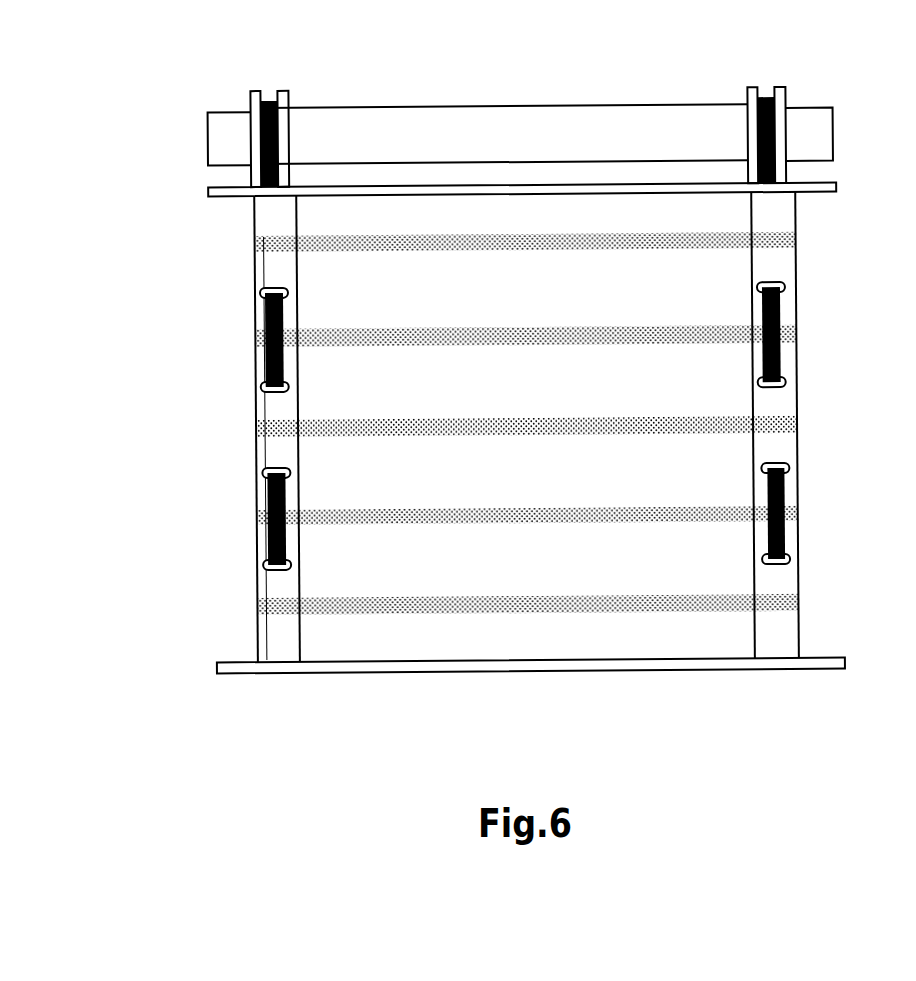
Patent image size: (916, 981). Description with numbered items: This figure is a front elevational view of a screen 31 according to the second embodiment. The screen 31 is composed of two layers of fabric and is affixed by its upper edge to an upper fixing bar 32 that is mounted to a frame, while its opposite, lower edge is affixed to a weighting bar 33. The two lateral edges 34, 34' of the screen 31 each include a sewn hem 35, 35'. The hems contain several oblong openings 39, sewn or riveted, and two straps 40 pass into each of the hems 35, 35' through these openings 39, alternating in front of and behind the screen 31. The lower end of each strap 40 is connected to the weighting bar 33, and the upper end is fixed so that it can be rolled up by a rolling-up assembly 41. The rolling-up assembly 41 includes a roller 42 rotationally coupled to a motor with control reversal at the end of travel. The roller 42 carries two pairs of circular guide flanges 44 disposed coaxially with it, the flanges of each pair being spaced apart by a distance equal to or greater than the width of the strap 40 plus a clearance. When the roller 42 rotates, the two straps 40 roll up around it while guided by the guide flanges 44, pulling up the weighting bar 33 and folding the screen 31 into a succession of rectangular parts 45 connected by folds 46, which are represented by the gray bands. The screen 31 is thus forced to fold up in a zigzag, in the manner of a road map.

The screen 31 is at (523, 392).
The upper fixing bar 32 is at (821, 191).
The weighting bar 33 is at (433, 668).
The lateral edge 34 is at (201, 429).
The lateral edge 34' is at (851, 425).
The sewn hem 35 is at (336, 429).
The sewn hem 35' is at (708, 425).
The oblong opening 39 is at (767, 469).
The strap 40 is at (266, 351).
The rolling-up assembly 41 is at (200, 140).
The roller 42 is at (483, 110).
The circular guide flange 44 is at (288, 104).
The rectangular part 45 is at (523, 487).
The fold 46 is at (593, 430).